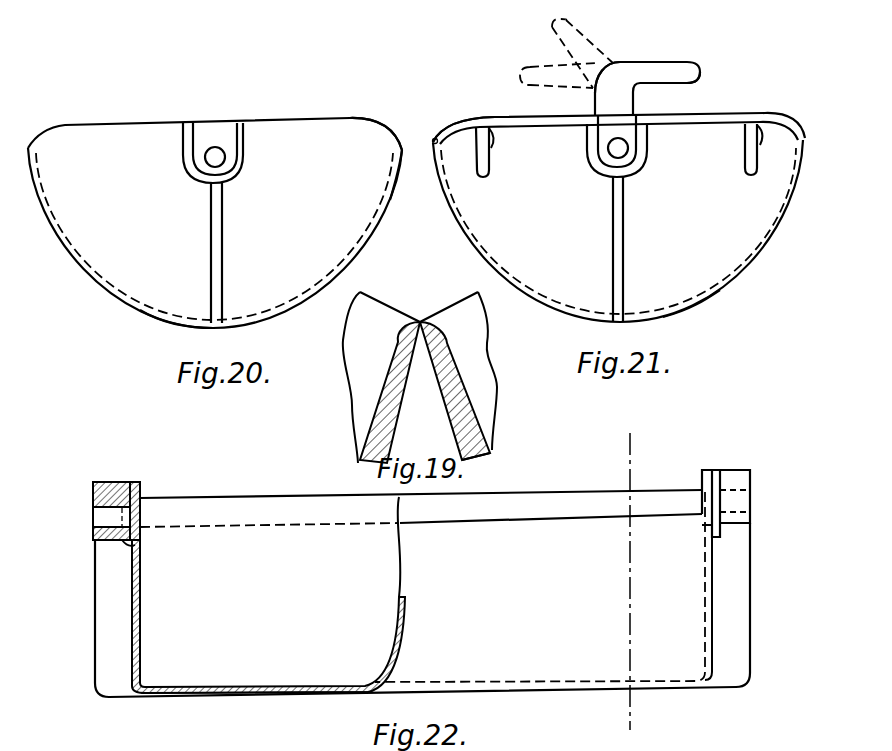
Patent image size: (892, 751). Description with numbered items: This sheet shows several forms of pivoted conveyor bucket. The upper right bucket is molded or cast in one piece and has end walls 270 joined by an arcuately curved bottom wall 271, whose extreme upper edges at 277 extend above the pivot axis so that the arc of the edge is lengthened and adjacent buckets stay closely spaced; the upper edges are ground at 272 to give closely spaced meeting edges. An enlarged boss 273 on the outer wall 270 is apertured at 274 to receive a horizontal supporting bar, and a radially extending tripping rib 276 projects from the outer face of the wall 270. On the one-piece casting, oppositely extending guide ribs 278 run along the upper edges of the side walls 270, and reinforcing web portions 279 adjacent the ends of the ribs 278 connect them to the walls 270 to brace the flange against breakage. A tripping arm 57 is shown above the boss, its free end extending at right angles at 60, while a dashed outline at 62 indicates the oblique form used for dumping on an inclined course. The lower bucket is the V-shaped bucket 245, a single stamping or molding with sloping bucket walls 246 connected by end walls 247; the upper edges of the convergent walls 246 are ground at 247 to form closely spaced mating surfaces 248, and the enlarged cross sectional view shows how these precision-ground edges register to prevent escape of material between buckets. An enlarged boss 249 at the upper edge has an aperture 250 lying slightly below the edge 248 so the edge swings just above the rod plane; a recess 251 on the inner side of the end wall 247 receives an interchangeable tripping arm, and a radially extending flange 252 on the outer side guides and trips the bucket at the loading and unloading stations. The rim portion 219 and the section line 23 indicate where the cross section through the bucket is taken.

In FIG. 22, the section line 23 is at (630, 433).
In FIG. 21, the tripping arm 57 is at (619, 96).
In FIG. 21, the right-angle free end of tripping arm 60 is at (690, 62).
In FIG. 21, the oblique tripping arm position 62 is at (583, 37).
In FIG. 22, the rim flange 219 is at (740, 478).
In FIG. 20, the V-shaped bucket 245 is at (114, 301).
In FIG. 21, the V-shaped bucket 245 is at (746, 267).
In FIG. 19, the V-shaped bucket 245 is at (490, 431).
In FIG. 22, the V-shaped bucket 245 is at (197, 704).
In FIG. 19, the sloping bucket wall 246 is at (465, 410).
In FIG. 22, the sloping bucket wall 246 is at (308, 712).
In FIG. 19, the end wall 247 is at (408, 357).
In FIG. 22, the end wall 247 is at (142, 607).
In FIG. 19, the mating surface 248 is at (437, 292).
In FIG. 22, the mating surface 248 is at (528, 492).
In FIG. 22, the enlarged boss 249 is at (107, 482).
In FIG. 22, the aperture 250 is at (130, 542).
In FIG. 22, the recess 251 is at (137, 490).
In FIG. 22, the radially extending flange 252 is at (108, 660).
In FIG. 20, the end wall 270 is at (300, 167).
In FIG. 21, the end wall 270 is at (713, 270).
In FIG. 20, the curved bottom wall 271 is at (143, 317).
In FIG. 21, the curved bottom wall 271 is at (683, 312).
In FIG. 20, the ground upper edge 272 is at (402, 153).
In FIG. 20, the enlarged boss 273 is at (227, 137).
In FIG. 21, the enlarged boss 273 is at (634, 114).
In FIG. 20, the aperture 274 is at (211, 148).
In FIG. 21, the aperture 274 is at (595, 115).
In FIG. 20, the tripping rib 276 is at (222, 253).
In FIG. 21, the tripping rib 276 is at (624, 225).
In FIG. 20, the extreme upper edge of curved wall 277 is at (403, 140).
In FIG. 21, the extreme upper edge of curved wall 277 is at (435, 138).
In FIG. 21, the guide rib 278 is at (710, 116).
In FIG. 21, the reinforcing web portion 279 is at (492, 140).